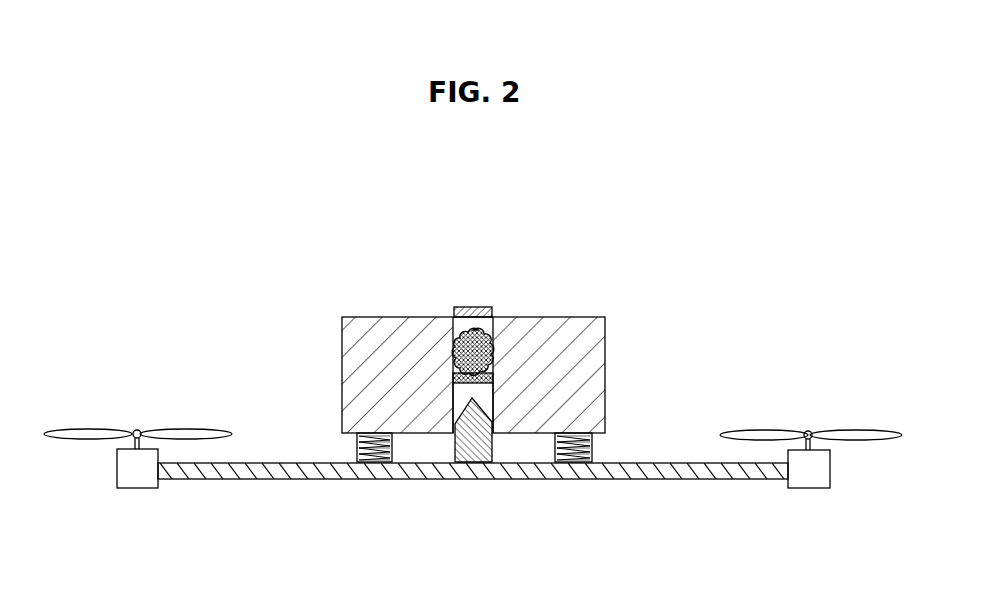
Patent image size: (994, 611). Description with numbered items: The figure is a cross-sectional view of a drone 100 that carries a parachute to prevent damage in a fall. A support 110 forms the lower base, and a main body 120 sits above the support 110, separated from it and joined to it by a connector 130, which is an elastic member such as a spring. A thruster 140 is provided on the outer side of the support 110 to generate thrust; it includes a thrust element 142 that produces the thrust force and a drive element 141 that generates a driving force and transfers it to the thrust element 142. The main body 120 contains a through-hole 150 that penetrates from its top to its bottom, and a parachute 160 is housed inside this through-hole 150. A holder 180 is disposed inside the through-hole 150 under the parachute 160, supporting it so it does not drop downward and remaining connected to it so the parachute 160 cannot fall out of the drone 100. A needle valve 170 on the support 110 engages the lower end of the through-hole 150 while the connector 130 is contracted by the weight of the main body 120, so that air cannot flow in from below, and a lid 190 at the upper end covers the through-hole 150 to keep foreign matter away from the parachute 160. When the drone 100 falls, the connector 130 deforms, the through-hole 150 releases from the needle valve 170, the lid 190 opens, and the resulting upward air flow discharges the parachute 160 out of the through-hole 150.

The drone 100 is at (493, 159).
The support 110 is at (666, 470).
The main body 120 is at (580, 332).
The connector 130 is at (570, 458).
The thruster 140 is at (473, 401).
The drive element 141 is at (830, 467).
The thrust element 142 is at (892, 360).
The through-hole 150 is at (486, 398).
The parachute 160 is at (481, 340).
The needle valve 170 is at (472, 455).
The holder 180 is at (455, 378).
The lid 190 is at (473, 307).